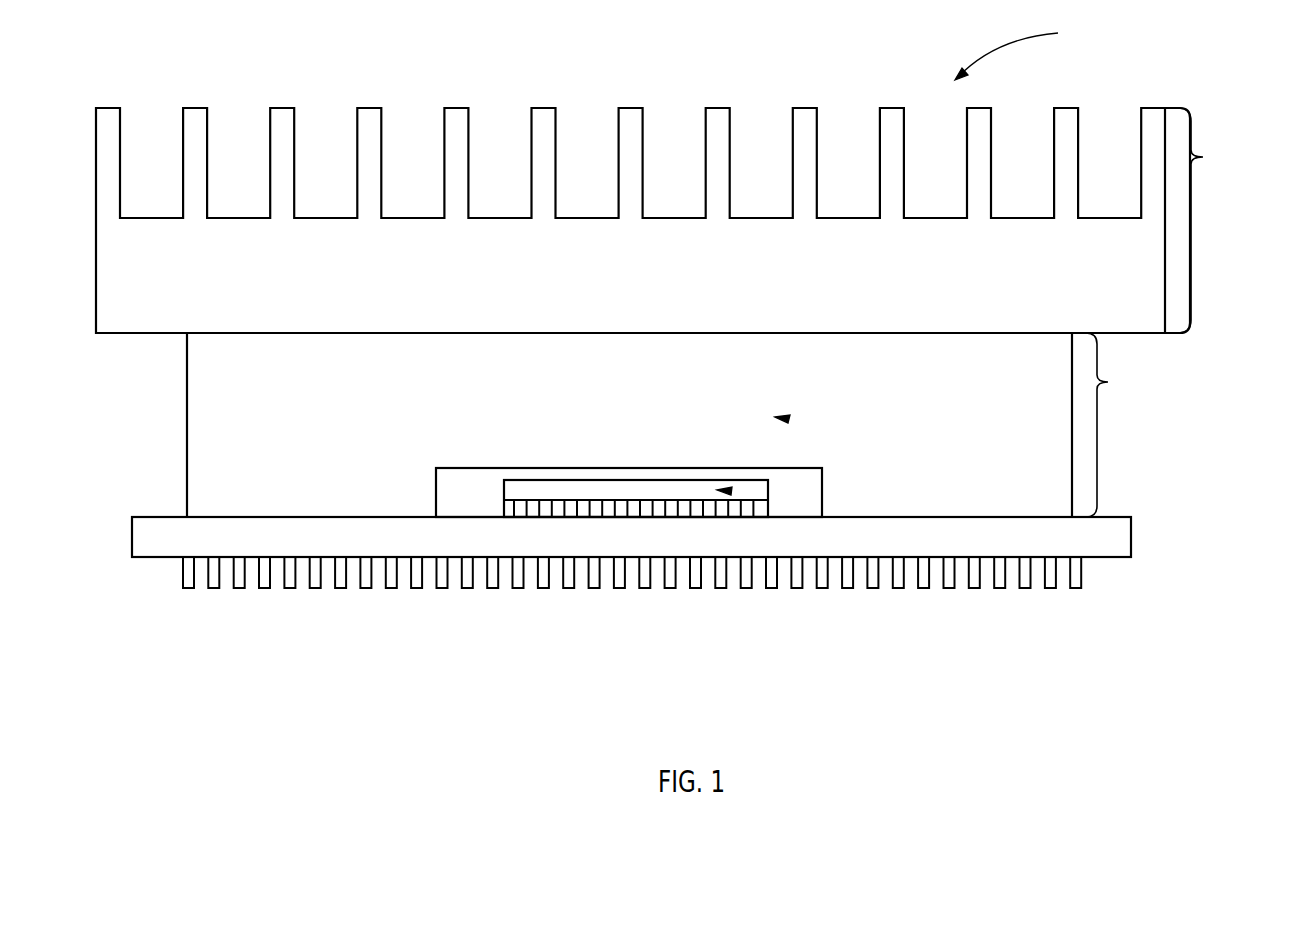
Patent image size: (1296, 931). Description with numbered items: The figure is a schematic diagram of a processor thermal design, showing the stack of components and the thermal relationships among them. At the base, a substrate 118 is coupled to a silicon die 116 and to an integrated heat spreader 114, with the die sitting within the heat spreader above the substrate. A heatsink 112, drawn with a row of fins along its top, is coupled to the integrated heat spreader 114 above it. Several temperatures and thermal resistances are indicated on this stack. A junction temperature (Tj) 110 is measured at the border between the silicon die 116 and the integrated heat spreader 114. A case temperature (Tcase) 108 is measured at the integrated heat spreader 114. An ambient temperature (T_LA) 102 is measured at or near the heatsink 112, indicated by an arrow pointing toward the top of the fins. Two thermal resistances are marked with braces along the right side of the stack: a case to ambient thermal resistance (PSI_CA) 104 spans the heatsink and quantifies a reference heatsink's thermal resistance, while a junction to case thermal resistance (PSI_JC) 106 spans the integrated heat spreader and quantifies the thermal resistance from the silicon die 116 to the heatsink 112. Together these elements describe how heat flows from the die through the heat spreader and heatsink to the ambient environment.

The ambient temperature 102 is at (1048, 48).
The case to ambient thermal resistance 104 is at (1225, 220).
The junction to case thermal resistance 106 is at (1149, 425).
The case temperature 108 is at (778, 418).
The junction temperature 110 is at (720, 490).
The heatsink 112 is at (728, 288).
The integrated heat spreader 114 is at (643, 434).
The silicon die 116 is at (685, 498).
The substrate 118 is at (730, 548).